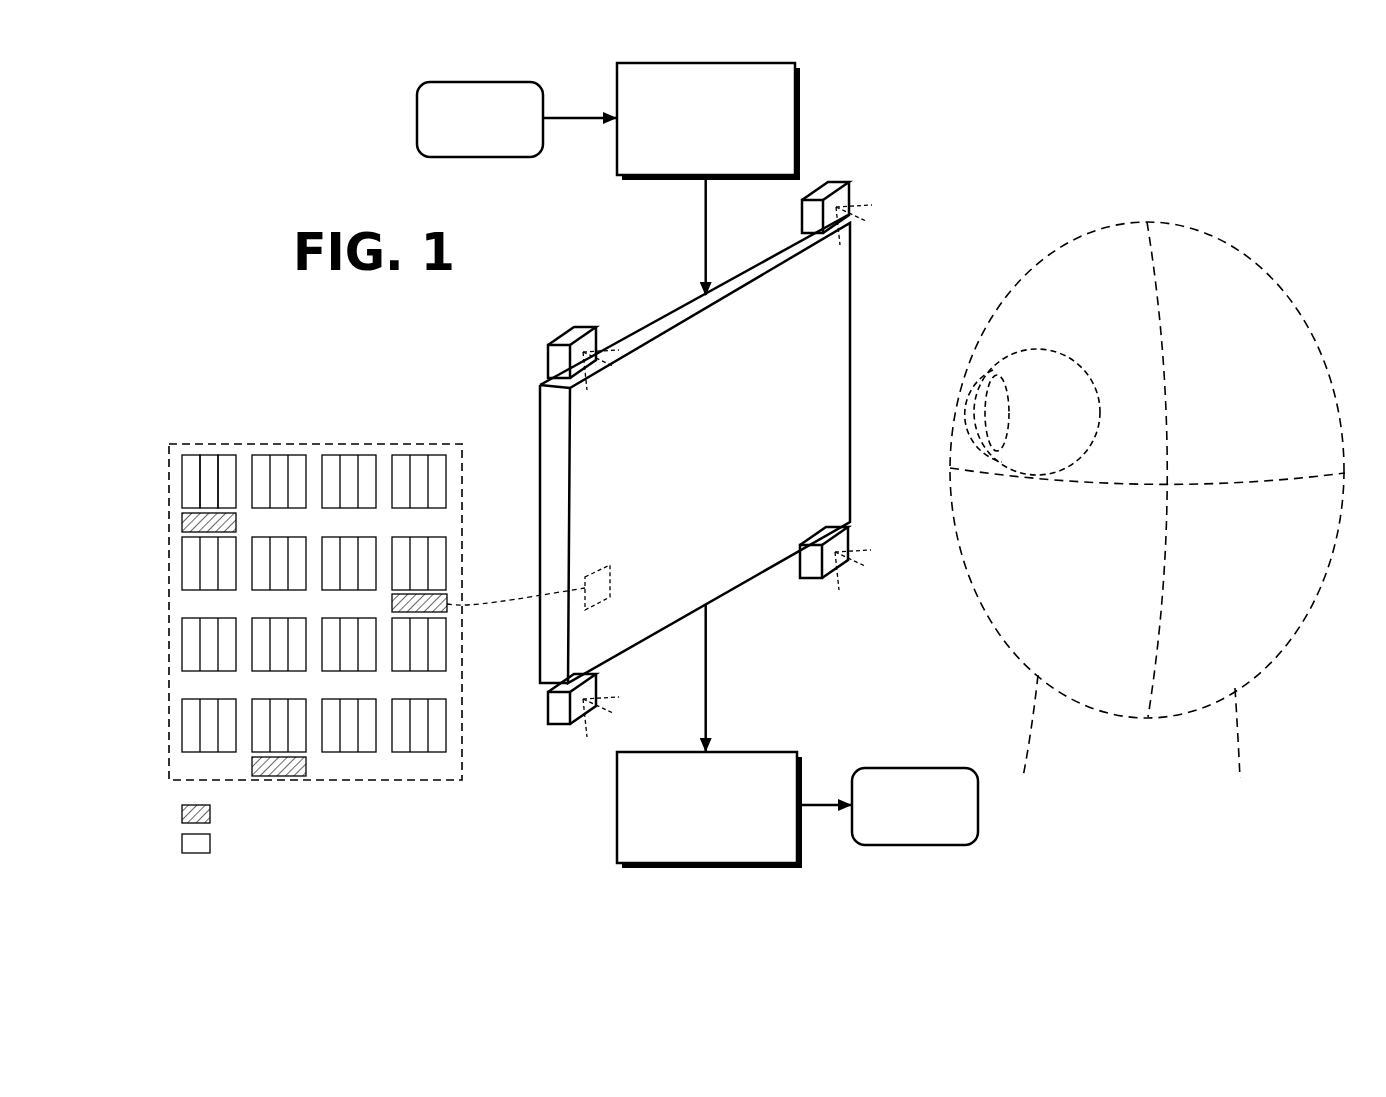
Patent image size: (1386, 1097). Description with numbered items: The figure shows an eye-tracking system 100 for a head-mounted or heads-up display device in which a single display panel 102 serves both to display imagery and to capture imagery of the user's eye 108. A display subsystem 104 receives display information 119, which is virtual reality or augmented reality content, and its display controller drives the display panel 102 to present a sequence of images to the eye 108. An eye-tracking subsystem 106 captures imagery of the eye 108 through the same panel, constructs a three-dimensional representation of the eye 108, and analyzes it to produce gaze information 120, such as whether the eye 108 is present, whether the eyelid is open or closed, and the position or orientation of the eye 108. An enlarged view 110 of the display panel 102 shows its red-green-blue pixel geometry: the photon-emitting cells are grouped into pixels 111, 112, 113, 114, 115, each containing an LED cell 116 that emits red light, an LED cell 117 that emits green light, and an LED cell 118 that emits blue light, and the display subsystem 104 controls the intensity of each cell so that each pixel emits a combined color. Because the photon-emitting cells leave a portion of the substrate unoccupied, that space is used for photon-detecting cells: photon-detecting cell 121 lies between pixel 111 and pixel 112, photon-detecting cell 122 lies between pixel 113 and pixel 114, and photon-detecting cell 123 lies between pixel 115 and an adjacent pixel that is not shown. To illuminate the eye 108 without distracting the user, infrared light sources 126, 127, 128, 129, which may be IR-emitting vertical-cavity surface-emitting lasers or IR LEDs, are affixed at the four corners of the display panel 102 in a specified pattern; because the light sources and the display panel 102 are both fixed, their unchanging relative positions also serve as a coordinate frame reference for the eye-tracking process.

The eye-tracking system 100 is at (892, 136).
The display panel 102 is at (834, 351).
The display subsystem 104 is at (708, 121).
The eye-tracking subsystem 106 is at (709, 810).
The eye 108 is at (1084, 373).
The enlarged view 110 is at (463, 765).
The pixel 111 is at (238, 460).
The pixel 112 is at (216, 595).
The pixel 113 is at (443, 534).
The pixel 114 is at (421, 676).
The pixel 115 is at (289, 693).
The LED cell 116 is at (188, 455).
The LED cell 117 is at (206, 455).
The LED cell 118 is at (222, 455).
The display information 119 is at (480, 119).
The gaze information 120 is at (915, 806).
The photon-detecting cell 121 is at (237, 522).
The photon-detecting cell 122 is at (392, 603).
The photon-detecting cell 123 is at (306, 766).
The IR light source 126 is at (597, 335).
The IR light source 127 is at (854, 189).
The IR light source 128 is at (852, 534).
The IR light source 129 is at (600, 681).